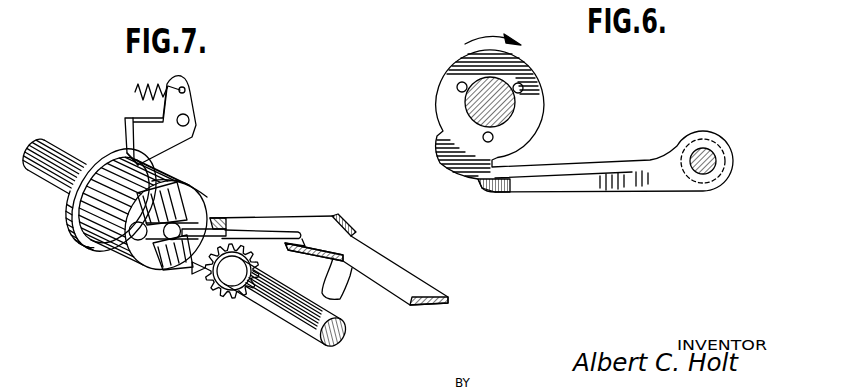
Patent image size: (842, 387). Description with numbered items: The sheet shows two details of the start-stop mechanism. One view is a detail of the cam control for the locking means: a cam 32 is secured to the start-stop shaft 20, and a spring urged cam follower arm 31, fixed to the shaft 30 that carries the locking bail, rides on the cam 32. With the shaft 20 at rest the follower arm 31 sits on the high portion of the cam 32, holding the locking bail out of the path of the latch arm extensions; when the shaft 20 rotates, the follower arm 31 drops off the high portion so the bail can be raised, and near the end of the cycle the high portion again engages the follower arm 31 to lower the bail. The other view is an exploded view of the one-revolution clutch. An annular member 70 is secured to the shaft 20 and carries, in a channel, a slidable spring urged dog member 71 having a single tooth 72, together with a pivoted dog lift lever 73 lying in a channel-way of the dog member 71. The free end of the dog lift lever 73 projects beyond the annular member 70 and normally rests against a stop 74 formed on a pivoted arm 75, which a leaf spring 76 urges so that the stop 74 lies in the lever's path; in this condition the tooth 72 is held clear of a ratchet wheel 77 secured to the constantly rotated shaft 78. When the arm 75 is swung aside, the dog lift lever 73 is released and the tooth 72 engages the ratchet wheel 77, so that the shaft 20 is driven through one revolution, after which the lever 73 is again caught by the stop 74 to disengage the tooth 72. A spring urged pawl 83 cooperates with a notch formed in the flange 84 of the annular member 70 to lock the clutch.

In FIG. 7, the start-stop shaft 20 is at (48, 145).
In FIG. 6, the start-stop shaft 20 is at (501, 89).
In FIG. 6, the shaft 30 is at (711, 150).
In FIG. 6, the cam follower arm 31 is at (548, 177).
In FIG. 6, the cam 32 is at (450, 80).
In FIG. 7, the annular member 70 is at (117, 225).
In FIG. 7, the dog member 71 is at (163, 207).
In FIG. 7, the tooth 72 is at (192, 272).
In FIG. 7, the dog lift lever 73 is at (200, 225).
In FIG. 7, the stop 74 is at (246, 221).
In FIG. 7, the pivoted arm 75 is at (387, 266).
In FIG. 7, the leaf spring 76 is at (336, 284).
In FIG. 7, the ratchet wheel 77 is at (212, 289).
In FIG. 7, the constantly rotated shaft 78 is at (286, 313).
In FIG. 7, the pawl 83 is at (143, 138).
In FIG. 7, the flange 84 is at (97, 160).